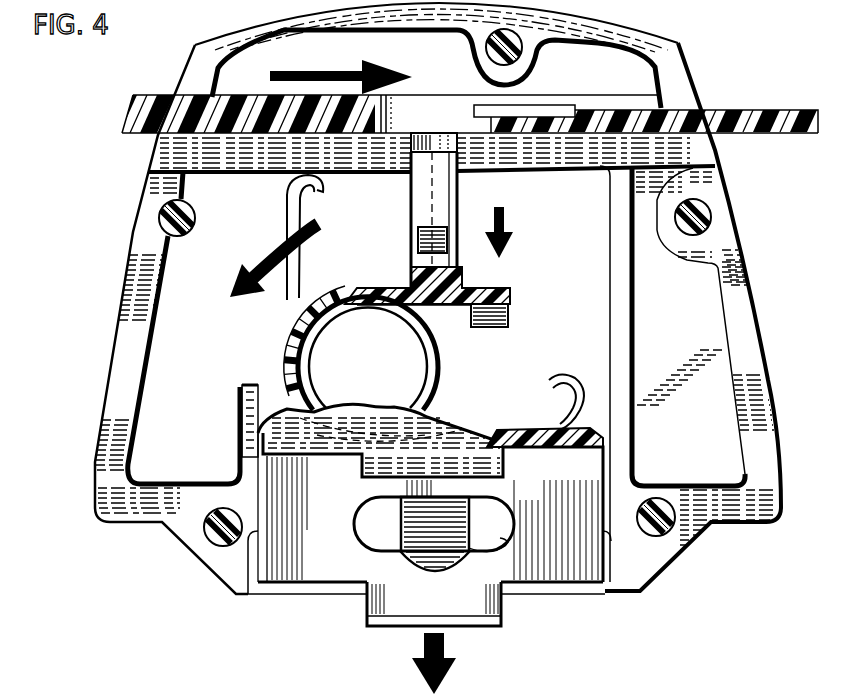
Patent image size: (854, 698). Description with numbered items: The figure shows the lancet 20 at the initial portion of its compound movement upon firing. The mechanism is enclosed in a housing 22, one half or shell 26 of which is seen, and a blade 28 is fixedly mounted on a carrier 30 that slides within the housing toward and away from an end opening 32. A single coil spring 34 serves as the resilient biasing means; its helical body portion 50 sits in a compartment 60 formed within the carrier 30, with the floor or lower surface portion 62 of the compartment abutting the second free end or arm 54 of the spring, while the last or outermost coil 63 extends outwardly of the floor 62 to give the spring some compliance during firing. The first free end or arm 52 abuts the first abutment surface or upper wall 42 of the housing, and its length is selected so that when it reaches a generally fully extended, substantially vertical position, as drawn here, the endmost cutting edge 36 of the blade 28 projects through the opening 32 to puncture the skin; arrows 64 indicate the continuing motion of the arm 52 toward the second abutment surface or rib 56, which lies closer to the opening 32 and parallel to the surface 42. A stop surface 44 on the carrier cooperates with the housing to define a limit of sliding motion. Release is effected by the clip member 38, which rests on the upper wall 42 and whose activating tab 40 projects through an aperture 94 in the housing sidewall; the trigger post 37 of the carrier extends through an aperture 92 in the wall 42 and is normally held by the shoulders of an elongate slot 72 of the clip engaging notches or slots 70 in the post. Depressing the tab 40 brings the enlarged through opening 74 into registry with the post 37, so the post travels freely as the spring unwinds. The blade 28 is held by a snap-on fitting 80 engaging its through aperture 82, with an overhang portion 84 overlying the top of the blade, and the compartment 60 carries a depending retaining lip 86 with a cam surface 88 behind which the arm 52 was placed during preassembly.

The lancet 20 is at (108, 210).
The housing 22 is at (704, 48).
The housing half 26 is at (744, 289).
The blade 28 is at (306, 556).
The carrier 30 is at (285, 376).
The end opening 32 is at (606, 593).
The coil spring 34 is at (452, 371).
The cutting edge 36 is at (488, 622).
The trigger post 37 is at (462, 192).
The clip member 38 is at (788, 117).
The projecting outer end 40 is at (141, 95).
The first abutment surface 42 is at (236, 174).
The stop surface 44 is at (490, 287).
The helical body portion 50 is at (409, 338).
The free end arm 52 is at (289, 181).
The second free end arm 54 is at (521, 425).
The second abutment surface 56 is at (244, 386).
The compartment 60 is at (447, 304).
The floor 62 is at (574, 427).
The outermost coil 63 is at (360, 455).
The arrows 64 is at (232, 276).
The notches 70 is at (412, 238).
The elongate slot 72 is at (545, 112).
The enlarged through opening 74 is at (414, 121).
The blade-receiving fitting 80 is at (401, 543).
The through aperture 82 is at (484, 545).
The overhang portion 84 is at (498, 474).
The retaining lip 86 is at (518, 300).
The cam surface 88 is at (510, 316).
The aperture 92 is at (410, 153).
The sidewall aperture 94 is at (128, 124).